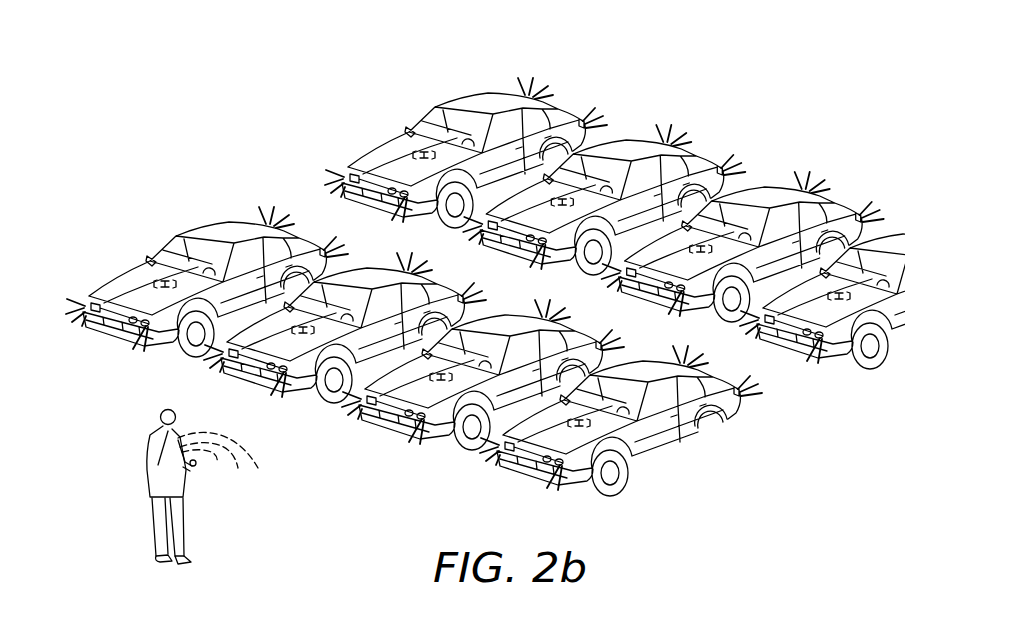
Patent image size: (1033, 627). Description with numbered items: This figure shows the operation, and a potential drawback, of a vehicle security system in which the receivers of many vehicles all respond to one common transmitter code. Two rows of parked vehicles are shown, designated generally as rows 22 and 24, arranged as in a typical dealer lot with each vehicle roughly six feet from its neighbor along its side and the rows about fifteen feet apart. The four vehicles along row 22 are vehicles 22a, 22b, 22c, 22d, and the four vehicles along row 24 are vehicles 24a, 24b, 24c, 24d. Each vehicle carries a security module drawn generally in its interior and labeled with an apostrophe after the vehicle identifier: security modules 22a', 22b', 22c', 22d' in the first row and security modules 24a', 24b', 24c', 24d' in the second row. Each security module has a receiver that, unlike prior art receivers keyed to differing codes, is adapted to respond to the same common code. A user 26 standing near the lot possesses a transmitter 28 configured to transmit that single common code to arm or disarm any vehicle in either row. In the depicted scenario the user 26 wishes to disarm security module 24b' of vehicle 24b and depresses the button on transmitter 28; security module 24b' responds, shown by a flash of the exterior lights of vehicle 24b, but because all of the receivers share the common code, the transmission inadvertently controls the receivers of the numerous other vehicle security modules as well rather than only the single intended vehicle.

The row of vehicles 22 is at (436, 88).
The vehicle 22a is at (466, 172).
The vehicle 22b is at (604, 220).
The vehicle 22c is at (743, 267).
The vehicle 22d is at (870, 313).
The security module 22a' is at (391, 130).
The security module 22b' is at (529, 257).
The security module 22c' is at (669, 304).
The security module 22d' is at (808, 350).
The row of vehicles 24 is at (178, 216).
The vehicle 24a is at (207, 302).
The vehicle 24b is at (344, 347).
The vehicle 24c is at (482, 394).
The vehicle 24d is at (619, 439).
The security module 24a' is at (130, 257).
The security module 24b' is at (258, 373).
The security module 24c' is at (396, 420).
The security module 24d' is at (533, 466).
The user 26 is at (151, 473).
The transmitter 28 is at (196, 467).